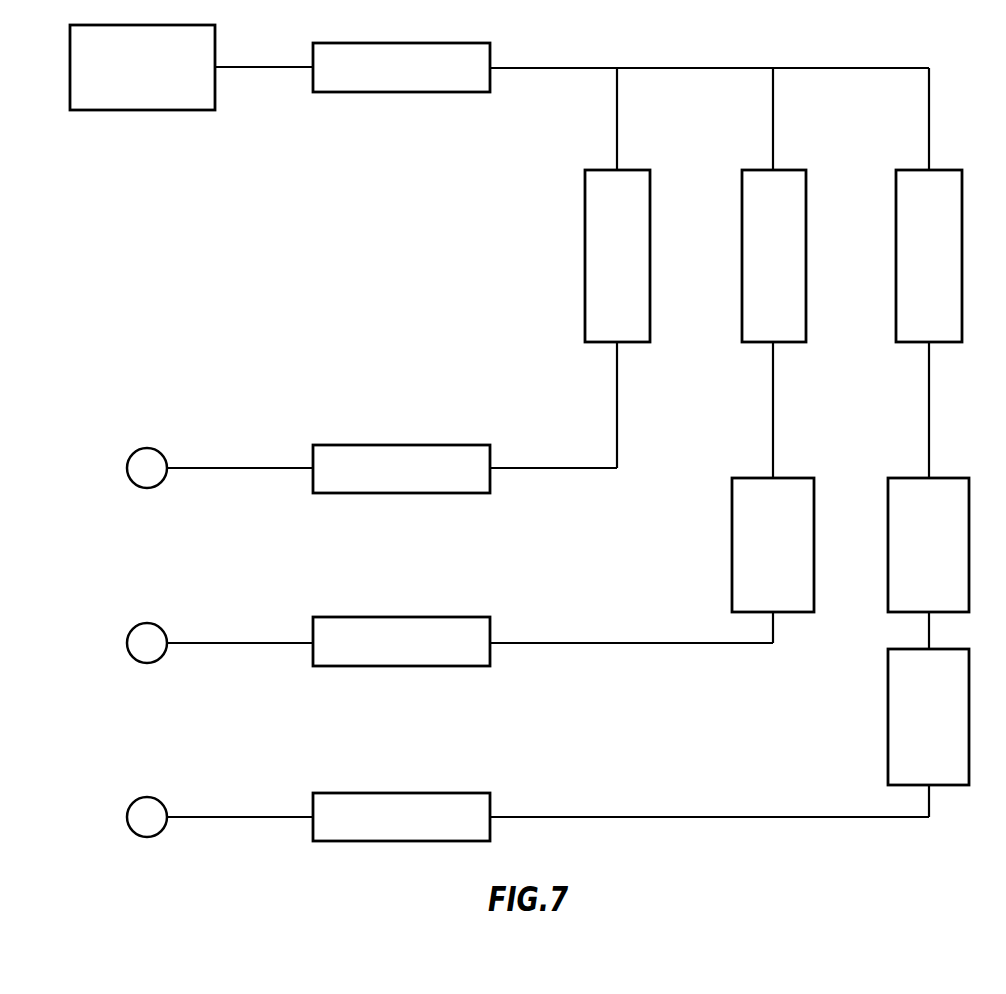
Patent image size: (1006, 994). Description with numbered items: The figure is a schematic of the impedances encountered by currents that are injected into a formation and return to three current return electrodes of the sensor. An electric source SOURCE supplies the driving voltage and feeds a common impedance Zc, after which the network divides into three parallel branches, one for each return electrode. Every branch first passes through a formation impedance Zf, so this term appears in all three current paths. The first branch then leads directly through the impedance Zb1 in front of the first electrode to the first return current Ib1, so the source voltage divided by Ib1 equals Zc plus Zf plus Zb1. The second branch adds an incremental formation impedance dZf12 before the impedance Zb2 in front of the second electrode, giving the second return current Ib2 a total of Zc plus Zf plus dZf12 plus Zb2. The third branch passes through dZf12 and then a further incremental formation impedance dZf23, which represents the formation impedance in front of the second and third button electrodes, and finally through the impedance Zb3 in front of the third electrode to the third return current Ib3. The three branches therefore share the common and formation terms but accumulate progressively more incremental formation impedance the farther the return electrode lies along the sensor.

The electric source SOURCE is at (142, 67).
The common impedance Zc is at (401, 67).
The formation impedance Zf is at (773, 256).
The incremental formation impedance between first and second electrodes dZf12 is at (850, 545).
The incremental formation impedance between second and third electrodes dZf23 is at (928, 717).
The first return current Ib1 is at (119, 468).
The second return current Ib2 is at (119, 643).
The third return current Ib3 is at (119, 817).
The impedance in front of first electrode Zb1 is at (401, 469).
The impedance in front of second electrode Zb2 is at (401, 641).
The impedance in front of third electrode Zb3 is at (401, 817).